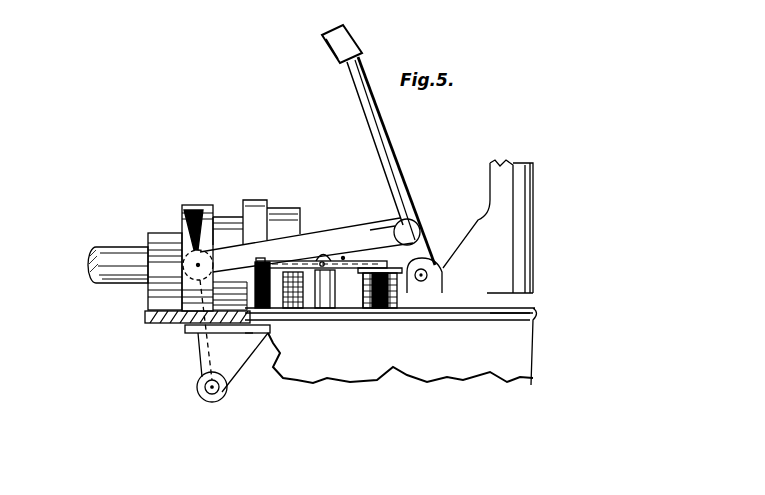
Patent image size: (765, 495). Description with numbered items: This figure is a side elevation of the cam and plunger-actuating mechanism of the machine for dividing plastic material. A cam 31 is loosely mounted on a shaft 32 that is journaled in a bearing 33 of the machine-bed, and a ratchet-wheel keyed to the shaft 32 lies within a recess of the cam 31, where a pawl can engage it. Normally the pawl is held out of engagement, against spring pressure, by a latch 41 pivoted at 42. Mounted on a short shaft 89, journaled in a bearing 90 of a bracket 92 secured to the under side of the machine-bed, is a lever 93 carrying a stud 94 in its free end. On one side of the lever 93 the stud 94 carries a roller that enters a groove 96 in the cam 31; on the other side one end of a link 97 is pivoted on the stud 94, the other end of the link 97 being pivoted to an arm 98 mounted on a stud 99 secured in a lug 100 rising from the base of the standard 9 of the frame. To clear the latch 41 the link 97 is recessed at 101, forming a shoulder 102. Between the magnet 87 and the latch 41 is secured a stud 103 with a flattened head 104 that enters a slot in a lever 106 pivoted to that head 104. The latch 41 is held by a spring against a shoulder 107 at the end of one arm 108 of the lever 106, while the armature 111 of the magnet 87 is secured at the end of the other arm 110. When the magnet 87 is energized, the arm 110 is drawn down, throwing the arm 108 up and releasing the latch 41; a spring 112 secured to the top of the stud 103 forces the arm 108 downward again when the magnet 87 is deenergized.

The standard 9 is at (505, 213).
The cam 31 is at (191, 205).
The shaft 32 is at (107, 248).
The bearing 33 is at (163, 233).
The latch 41 is at (263, 292).
The pivot of latch 42 is at (270, 260).
The magnet 87 is at (385, 294).
The short shaft 89 is at (212, 390).
The bearing 90 is at (199, 390).
The bracket 92 is at (196, 333).
The lever 93 is at (182, 297).
The stud 94 is at (198, 265).
The groove 96 is at (225, 218).
The link 97 is at (310, 299).
The arm 98 is at (388, 152).
The stud 99 is at (421, 275).
The lug 100 is at (442, 272).
The recess 101 is at (250, 333).
The shoulder 102 is at (280, 262).
The stud 103 is at (330, 292).
The flattened head 104 is at (362, 292).
The lever 106 is at (315, 292).
The shoulder 107 is at (290, 292).
The arm of lever 108 is at (327, 262).
The arm of lever 110 is at (490, 318).
The armature 111 is at (343, 257).
The spring 112 is at (375, 222).